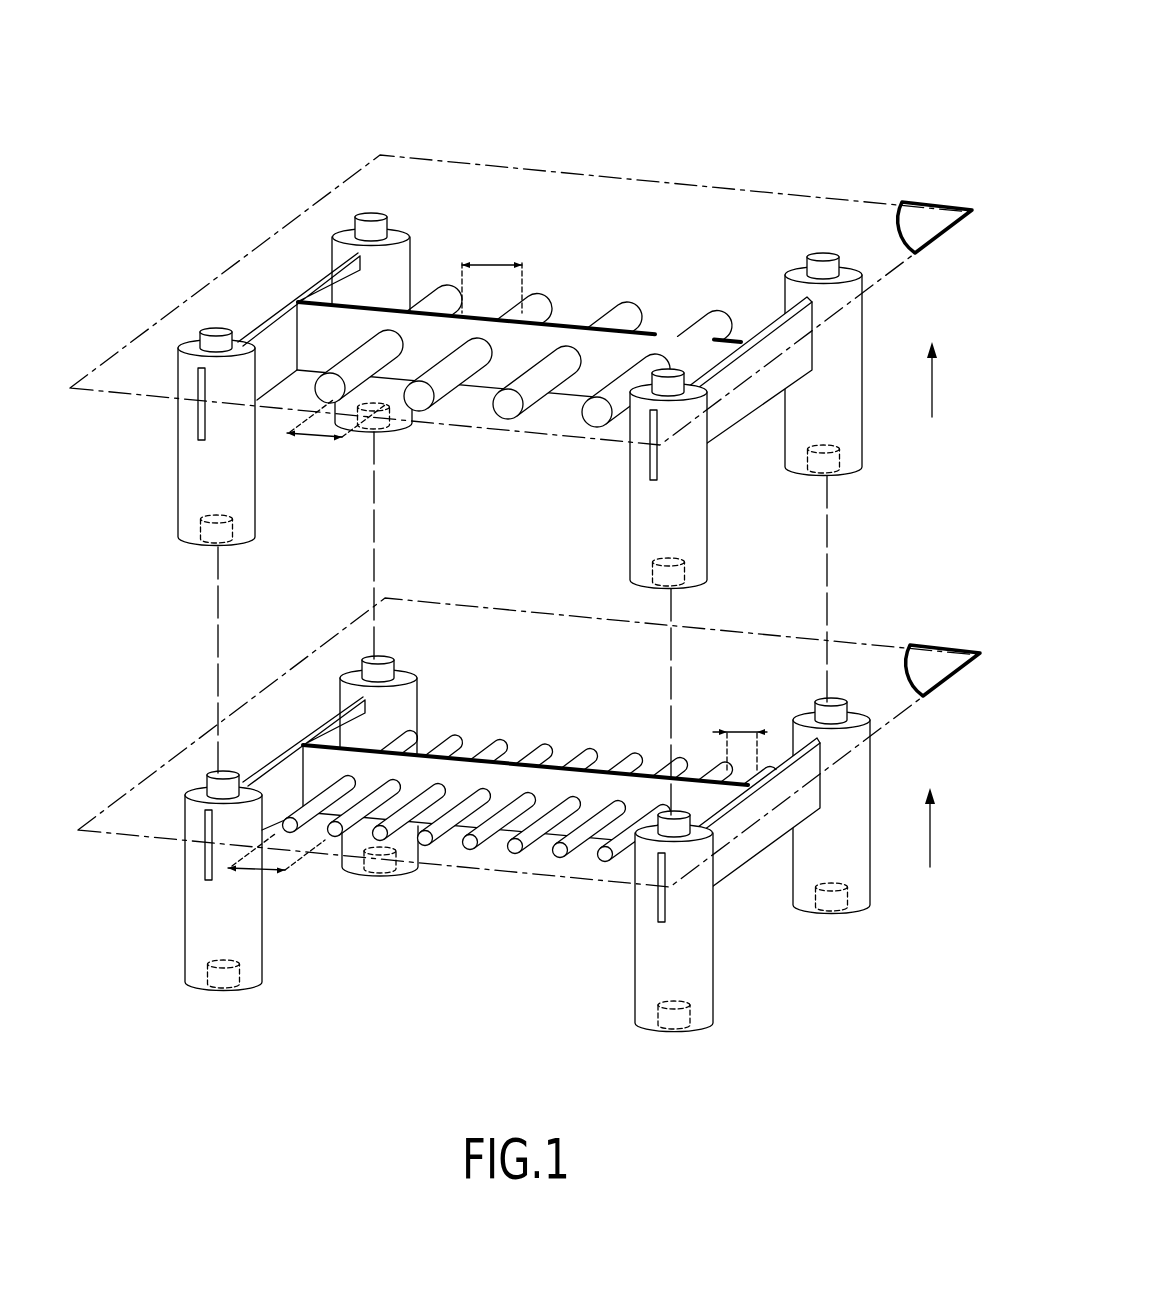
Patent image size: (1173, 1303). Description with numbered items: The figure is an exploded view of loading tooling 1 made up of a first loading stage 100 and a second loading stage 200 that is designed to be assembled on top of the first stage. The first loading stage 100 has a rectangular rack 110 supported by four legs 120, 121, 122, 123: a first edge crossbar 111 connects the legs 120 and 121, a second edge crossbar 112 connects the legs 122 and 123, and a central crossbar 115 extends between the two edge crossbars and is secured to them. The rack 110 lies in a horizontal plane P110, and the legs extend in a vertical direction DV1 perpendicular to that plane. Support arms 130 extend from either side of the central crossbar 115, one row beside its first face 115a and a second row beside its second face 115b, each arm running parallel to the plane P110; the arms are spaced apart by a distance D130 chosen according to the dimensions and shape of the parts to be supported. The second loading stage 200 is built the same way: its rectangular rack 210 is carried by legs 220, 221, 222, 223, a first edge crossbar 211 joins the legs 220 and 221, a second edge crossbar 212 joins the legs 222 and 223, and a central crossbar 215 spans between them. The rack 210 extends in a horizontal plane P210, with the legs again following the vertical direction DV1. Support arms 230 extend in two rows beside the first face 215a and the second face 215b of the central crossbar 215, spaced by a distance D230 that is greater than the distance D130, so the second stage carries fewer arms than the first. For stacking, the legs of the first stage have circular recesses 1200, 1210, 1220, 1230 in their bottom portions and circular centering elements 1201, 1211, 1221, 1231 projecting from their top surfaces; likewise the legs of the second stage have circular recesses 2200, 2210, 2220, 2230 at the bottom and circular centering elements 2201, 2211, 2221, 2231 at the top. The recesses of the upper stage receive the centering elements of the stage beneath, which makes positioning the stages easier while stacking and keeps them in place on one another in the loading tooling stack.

The loading tooling 1 is at (197, 93).
The first loading stage 100 is at (531, 814).
The second loading stage 200 is at (524, 370).
The rack 110 is at (527, 786).
The rack 210 is at (495, 358).
The first edge crossbar 111 is at (300, 742).
The first edge crossbar 211 is at (312, 288).
The second edge crossbar 112 is at (752, 840).
The second edge crossbar 212 is at (748, 402).
The central crossbar 115 is at (506, 810).
The central crossbar 215 is at (501, 367).
The first face 115a is at (537, 835).
The first face 215a is at (568, 397).
The second face 115b is at (553, 763).
The second face 215b is at (647, 333).
The leg 120 is at (188, 926).
The leg 220 is at (178, 473).
The leg 121 is at (408, 710).
The leg 221 is at (402, 267).
The leg 122 is at (870, 770).
The leg 222 is at (862, 327).
The leg 123 is at (706, 930).
The leg 223 is at (700, 487).
The support arms 130 is at (667, 766).
The support arms 230 is at (627, 303).
The circular recess 1200 is at (190, 985).
The circular recess 2200 is at (182, 544).
The circular centering element 1201 is at (222, 773).
The circular centering element 2201 is at (215, 333).
The circular recess 1210 is at (357, 876).
The circular recess 2210 is at (398, 440).
The circular centering element 1211 is at (380, 659).
The circular centering element 2211 is at (372, 218).
The circular recess 1220 is at (858, 910).
The circular recess 2220 is at (848, 470).
The circular centering element 1221 is at (838, 701).
The circular centering element 2221 is at (814, 256).
The circular recess 1230 is at (688, 1000).
The circular recess 2230 is at (680, 557).
The circular centering element 1231 is at (665, 840).
The circular centering element 2231 is at (668, 376).
The distance D130 is at (736, 731).
The distance D230 is at (497, 265).
The horizontal plane P110 is at (935, 658).
The horizontal plane P210 is at (927, 215).
The vertical direction DV1 is at (933, 384).